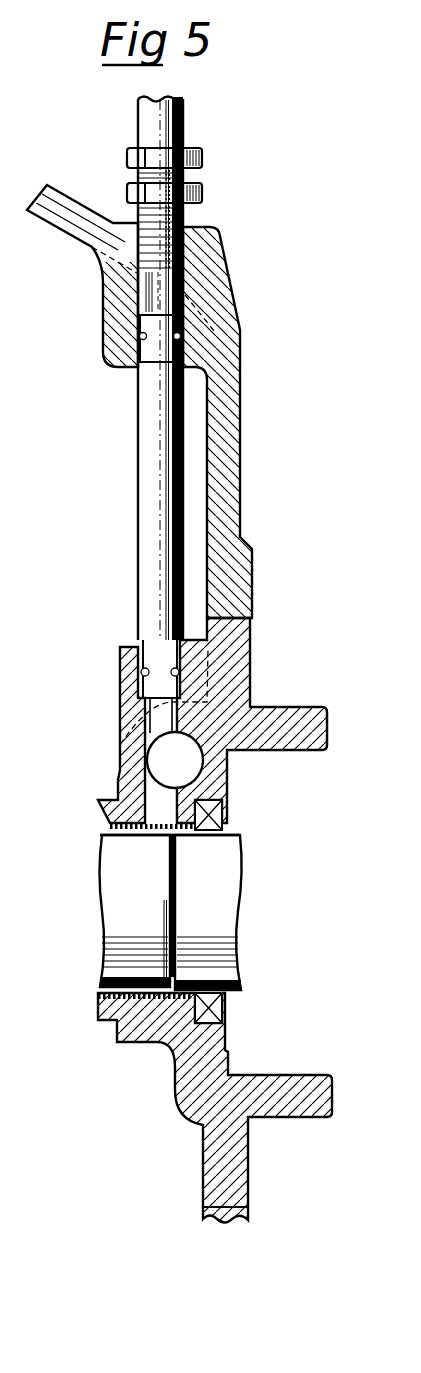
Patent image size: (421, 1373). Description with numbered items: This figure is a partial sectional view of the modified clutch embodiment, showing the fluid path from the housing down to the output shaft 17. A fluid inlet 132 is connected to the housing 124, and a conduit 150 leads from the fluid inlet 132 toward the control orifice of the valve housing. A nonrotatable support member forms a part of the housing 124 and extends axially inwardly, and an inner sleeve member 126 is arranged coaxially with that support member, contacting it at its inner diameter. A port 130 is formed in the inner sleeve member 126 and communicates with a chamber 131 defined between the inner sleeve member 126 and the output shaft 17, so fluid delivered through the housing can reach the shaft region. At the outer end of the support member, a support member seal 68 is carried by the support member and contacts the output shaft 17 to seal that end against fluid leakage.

The fluid inlet 132 is at (187, 218).
The conduit 150 is at (140, 433).
The housing 124 is at (241, 434).
The support member seal 68 is at (228, 808).
The inner sleeve member 126 is at (112, 833).
The chamber 131 is at (140, 837).
The port 130 is at (156, 840).
The output shaft 17 is at (230, 874).